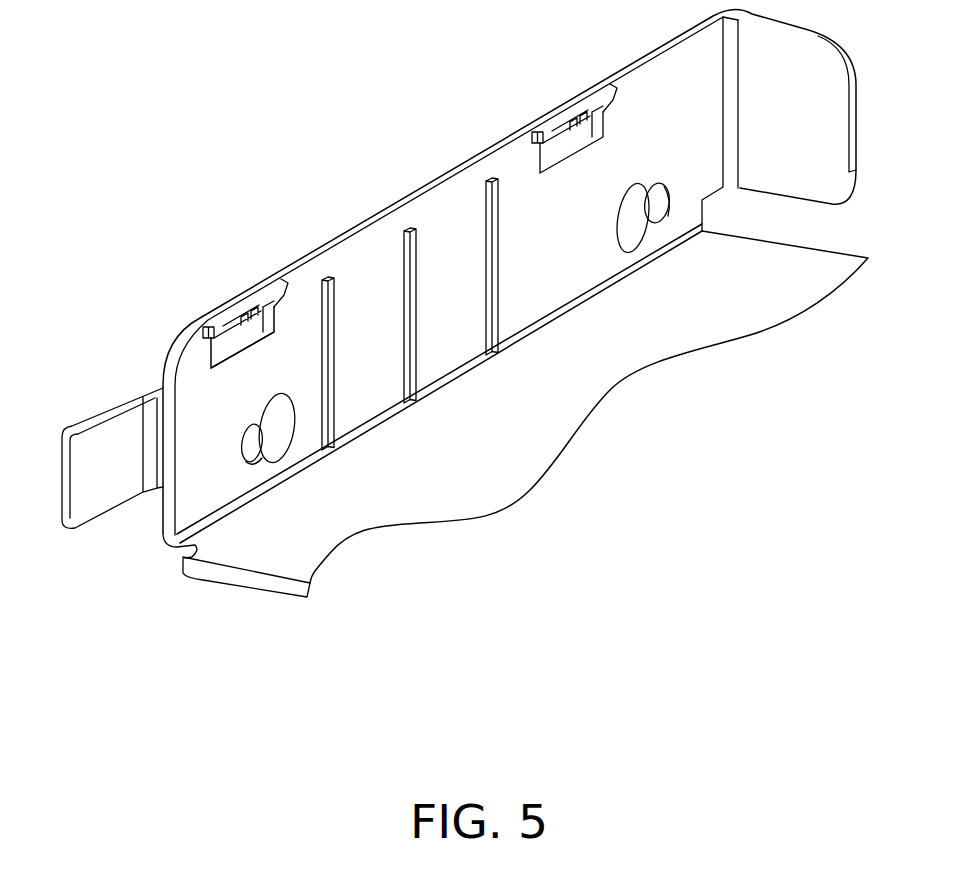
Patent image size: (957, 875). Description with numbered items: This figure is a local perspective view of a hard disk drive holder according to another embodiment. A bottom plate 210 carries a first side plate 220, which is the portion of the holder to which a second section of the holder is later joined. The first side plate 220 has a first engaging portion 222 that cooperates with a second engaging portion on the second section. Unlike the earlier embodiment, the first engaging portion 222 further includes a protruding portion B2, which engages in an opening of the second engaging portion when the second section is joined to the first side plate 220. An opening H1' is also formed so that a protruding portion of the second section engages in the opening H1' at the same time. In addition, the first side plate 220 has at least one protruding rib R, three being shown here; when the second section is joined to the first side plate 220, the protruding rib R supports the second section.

The first side plate 220 is at (377, 253).
The protruding rib R is at (417, 240).
The protruding portion B2 is at (254, 313).
The first engaging portion 222 is at (228, 393).
The opening H1' is at (338, 522).
The bottom plate 210 is at (242, 618).